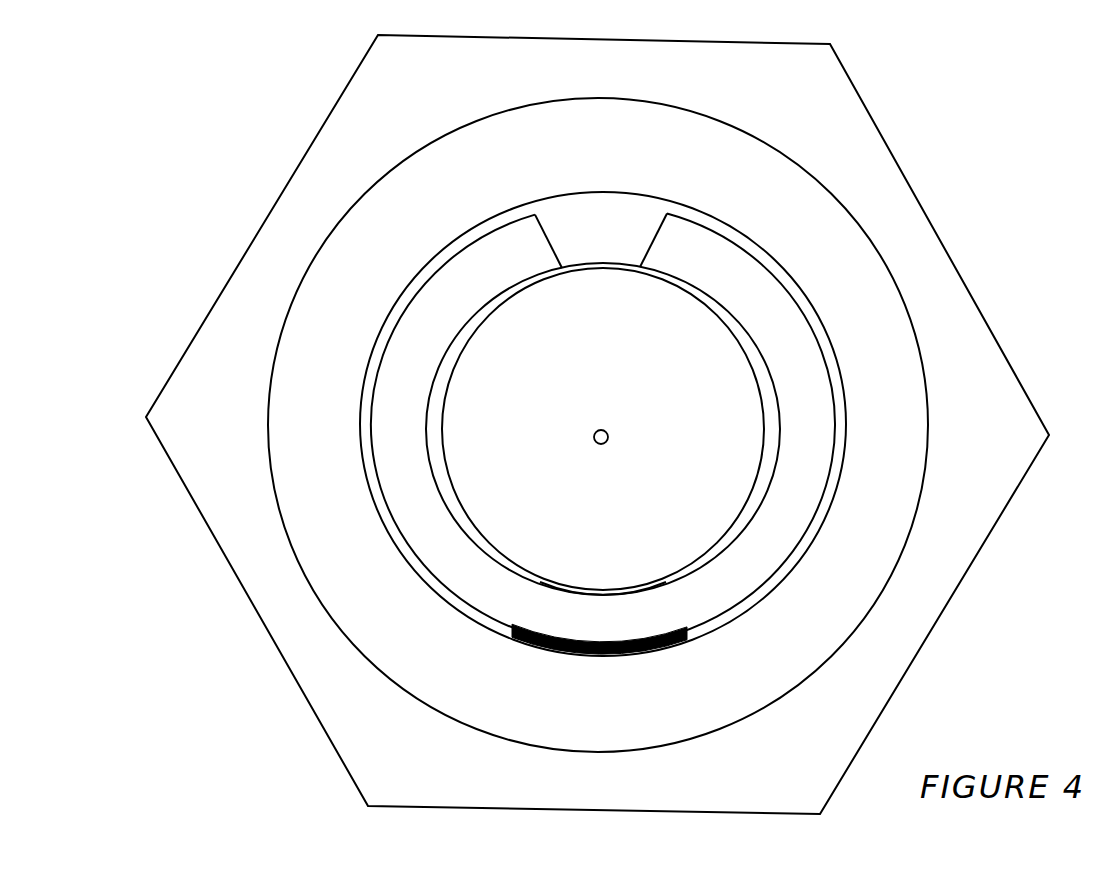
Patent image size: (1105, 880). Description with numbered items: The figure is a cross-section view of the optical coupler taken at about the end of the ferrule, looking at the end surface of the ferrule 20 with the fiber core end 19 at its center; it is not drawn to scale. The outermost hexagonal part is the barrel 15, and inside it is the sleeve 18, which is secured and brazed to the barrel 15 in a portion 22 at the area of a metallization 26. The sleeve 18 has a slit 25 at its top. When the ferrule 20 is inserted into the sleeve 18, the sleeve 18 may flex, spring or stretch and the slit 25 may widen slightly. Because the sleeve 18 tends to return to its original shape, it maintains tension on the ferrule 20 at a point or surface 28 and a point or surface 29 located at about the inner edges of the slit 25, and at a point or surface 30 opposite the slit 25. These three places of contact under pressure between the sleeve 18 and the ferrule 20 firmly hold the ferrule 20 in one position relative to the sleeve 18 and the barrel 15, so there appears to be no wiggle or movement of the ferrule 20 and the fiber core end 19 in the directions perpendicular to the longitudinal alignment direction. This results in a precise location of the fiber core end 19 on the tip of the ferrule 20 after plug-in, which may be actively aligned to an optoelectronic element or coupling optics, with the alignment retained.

The barrel 15 is at (885, 178).
The portion 22 is at (930, 440).
The sleeve 18 is at (762, 590).
The slit 25 is at (601, 268).
The point or surface 28 is at (556, 270).
The point or surface 29 is at (642, 270).
The ferrule 20 is at (622, 505).
The fiber core end 19 is at (609, 434).
The point or surface 30 is at (600, 592).
The metallization 26 is at (624, 658).